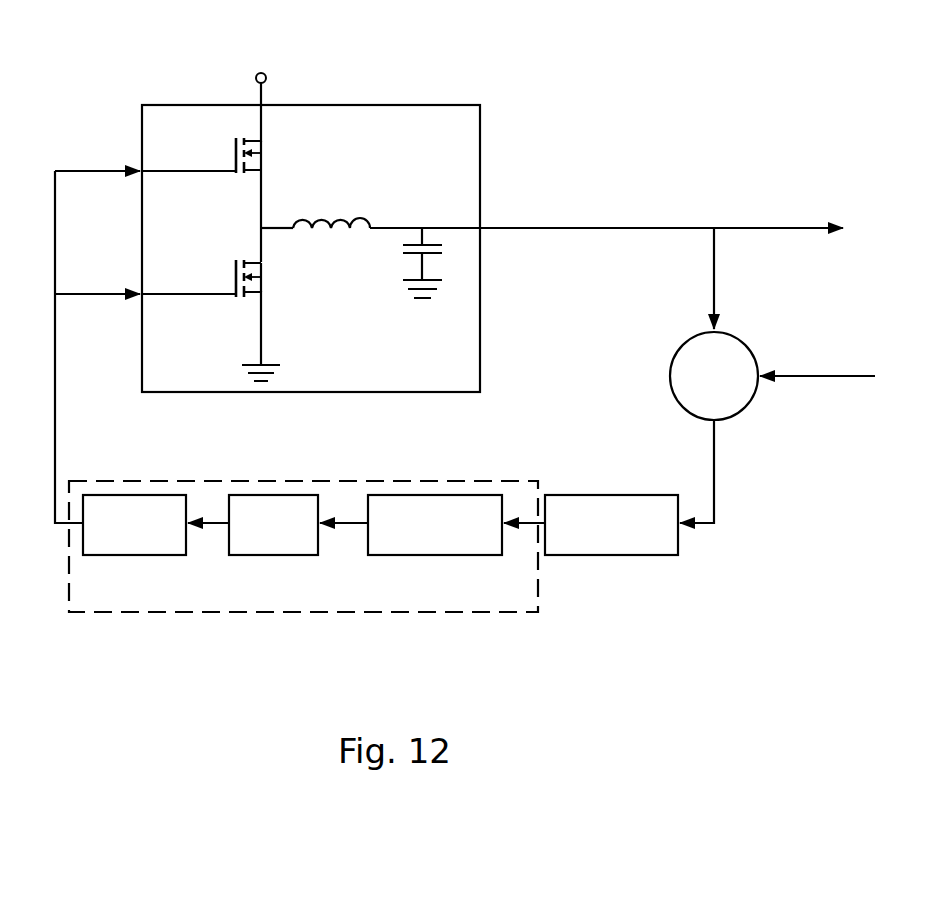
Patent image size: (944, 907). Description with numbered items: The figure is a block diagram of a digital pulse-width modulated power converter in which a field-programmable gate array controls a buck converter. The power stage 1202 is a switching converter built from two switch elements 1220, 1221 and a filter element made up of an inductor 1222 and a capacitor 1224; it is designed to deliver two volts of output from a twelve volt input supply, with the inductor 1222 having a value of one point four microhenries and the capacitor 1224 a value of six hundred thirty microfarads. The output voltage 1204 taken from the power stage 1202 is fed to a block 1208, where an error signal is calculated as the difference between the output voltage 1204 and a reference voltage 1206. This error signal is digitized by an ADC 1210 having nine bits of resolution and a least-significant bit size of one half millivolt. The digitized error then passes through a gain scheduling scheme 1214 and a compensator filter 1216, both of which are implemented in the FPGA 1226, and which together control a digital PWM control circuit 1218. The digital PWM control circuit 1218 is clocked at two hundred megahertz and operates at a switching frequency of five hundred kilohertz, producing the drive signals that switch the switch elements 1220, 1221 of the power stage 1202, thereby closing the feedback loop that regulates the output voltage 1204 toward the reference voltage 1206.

The power stage 1202 is at (484, 136).
The output voltage 1204 is at (672, 228).
The reference voltage 1206 is at (823, 376).
The block 1208 is at (677, 350).
The ADC 1210 is at (558, 495).
The gain scheduling scheme 1214 is at (442, 495).
The compensator filter 1216 is at (267, 495).
The digital PWM control circuit 1218 is at (150, 495).
The switch element 1220 is at (235, 150).
The switch element 1221 is at (234, 279).
The inductor 1222 is at (318, 218).
The capacitor 1224 is at (413, 255).
The FPGA 1226 is at (350, 617).